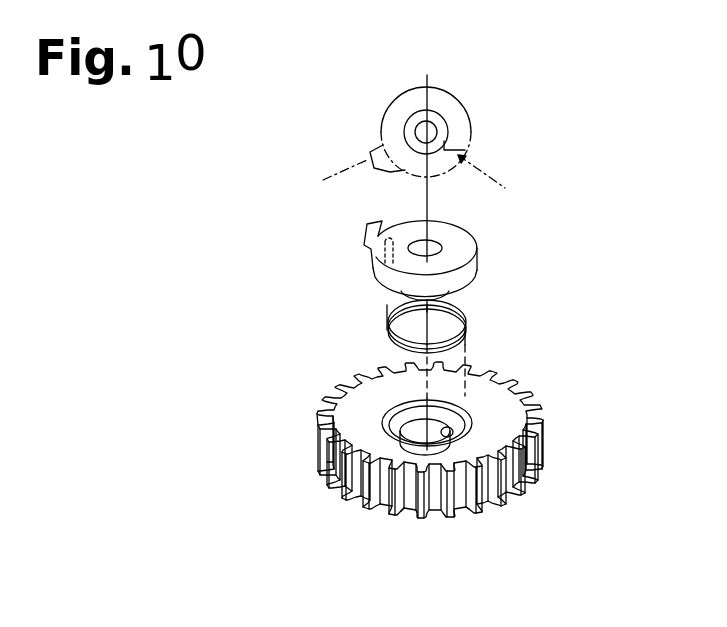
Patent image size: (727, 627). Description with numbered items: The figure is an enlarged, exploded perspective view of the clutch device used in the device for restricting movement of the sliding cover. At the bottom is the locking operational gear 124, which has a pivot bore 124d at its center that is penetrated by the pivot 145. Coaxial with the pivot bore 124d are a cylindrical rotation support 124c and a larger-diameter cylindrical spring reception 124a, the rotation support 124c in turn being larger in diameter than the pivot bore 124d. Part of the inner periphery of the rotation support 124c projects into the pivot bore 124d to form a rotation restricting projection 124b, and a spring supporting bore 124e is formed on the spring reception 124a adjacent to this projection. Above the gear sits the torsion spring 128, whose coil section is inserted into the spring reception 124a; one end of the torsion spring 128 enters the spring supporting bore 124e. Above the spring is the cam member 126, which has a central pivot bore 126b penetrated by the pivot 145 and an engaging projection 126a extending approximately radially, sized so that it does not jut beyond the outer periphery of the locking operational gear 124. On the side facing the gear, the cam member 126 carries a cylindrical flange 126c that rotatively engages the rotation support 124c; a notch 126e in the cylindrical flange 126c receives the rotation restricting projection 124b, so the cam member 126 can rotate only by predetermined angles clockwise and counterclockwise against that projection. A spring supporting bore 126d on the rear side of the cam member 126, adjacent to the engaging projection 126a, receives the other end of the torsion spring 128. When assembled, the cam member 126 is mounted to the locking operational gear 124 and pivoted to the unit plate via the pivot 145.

The locking operational gear 124 is at (352, 482).
The spring reception 124a is at (318, 433).
The rotation restricting projection 124b is at (472, 404).
The rotation support 124c is at (407, 519).
The pivot bore 124d is at (470, 509).
The spring supporting bore 124e is at (472, 426).
The cam member 126 is at (467, 220).
The engaging projection 126a is at (367, 226).
The pivot bore 126b is at (418, 243).
The cylindrical flange 126c is at (443, 294).
The spring supporting bore 126d is at (371, 274).
The notch 126e is at (466, 151).
The torsion spring 128 is at (468, 332).
The pivot 145 is at (470, 313).